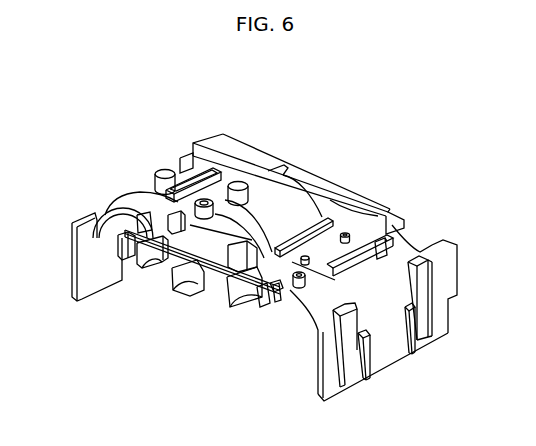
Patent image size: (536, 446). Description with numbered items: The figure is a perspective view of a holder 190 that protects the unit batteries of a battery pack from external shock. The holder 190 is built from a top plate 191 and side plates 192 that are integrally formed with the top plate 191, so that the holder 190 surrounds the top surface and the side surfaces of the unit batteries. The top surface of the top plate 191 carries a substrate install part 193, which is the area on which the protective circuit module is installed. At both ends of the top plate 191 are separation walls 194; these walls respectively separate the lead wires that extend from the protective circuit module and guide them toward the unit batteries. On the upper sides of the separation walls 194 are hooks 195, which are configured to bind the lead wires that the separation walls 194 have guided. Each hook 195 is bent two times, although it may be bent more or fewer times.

The holder 190 is at (88, 105).
The top plate 191 is at (306, 176).
The side plates 192 is at (392, 350).
The substrate install part 193 is at (388, 216).
The separation walls 194 is at (157, 248).
The hooks 195 is at (207, 250).